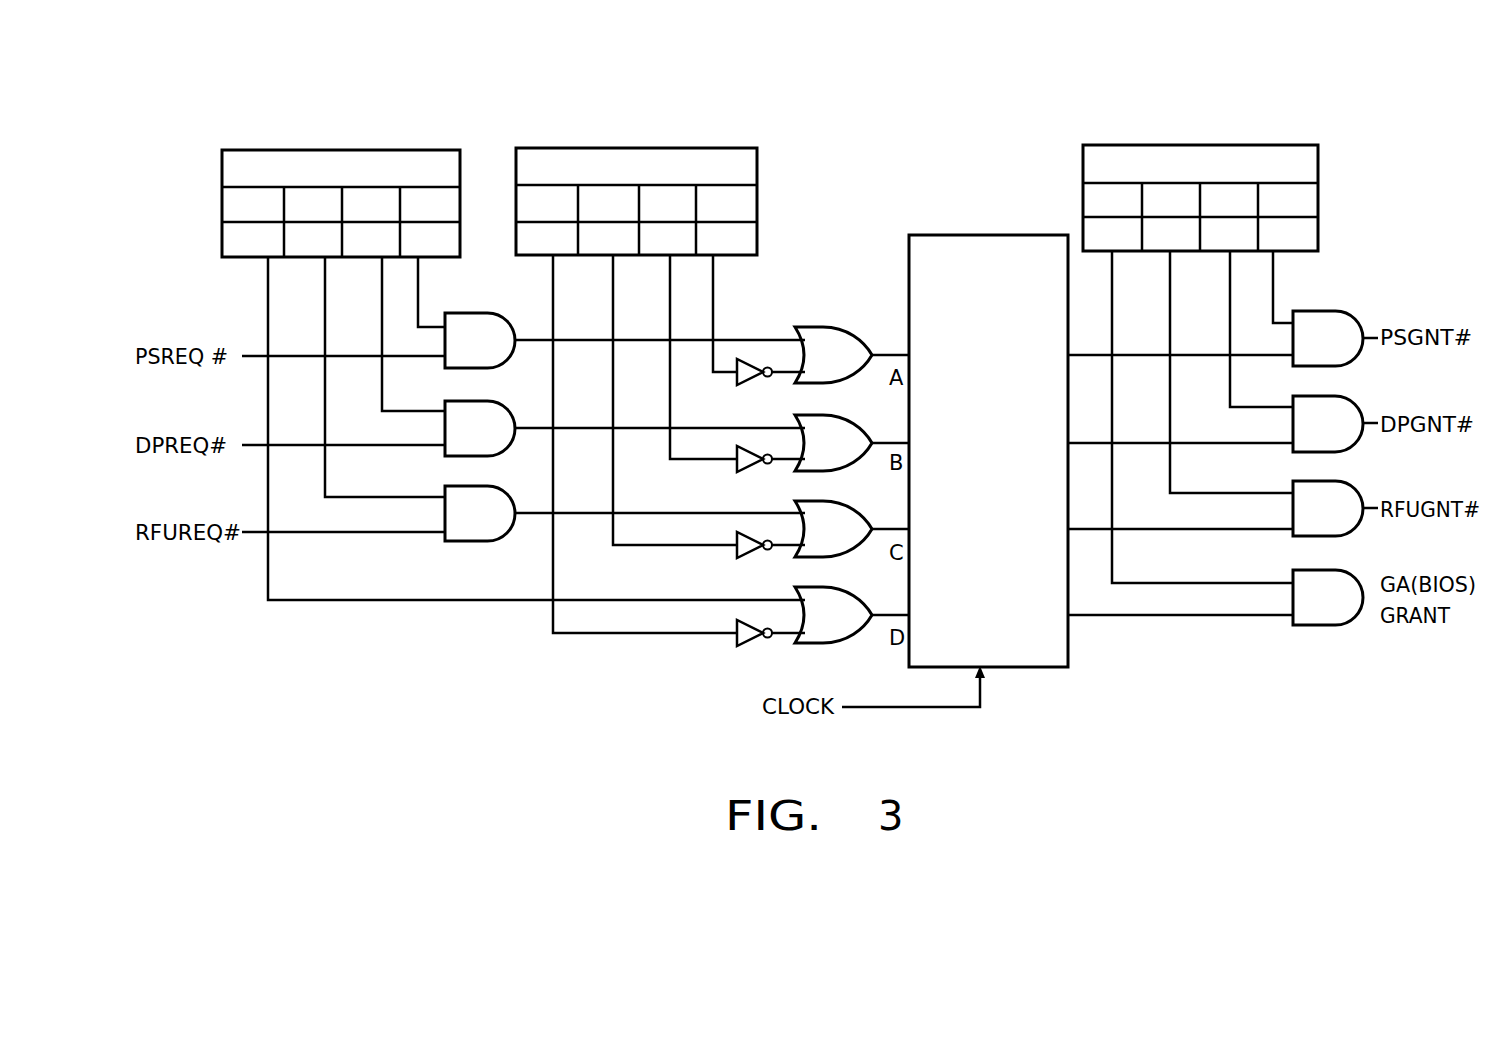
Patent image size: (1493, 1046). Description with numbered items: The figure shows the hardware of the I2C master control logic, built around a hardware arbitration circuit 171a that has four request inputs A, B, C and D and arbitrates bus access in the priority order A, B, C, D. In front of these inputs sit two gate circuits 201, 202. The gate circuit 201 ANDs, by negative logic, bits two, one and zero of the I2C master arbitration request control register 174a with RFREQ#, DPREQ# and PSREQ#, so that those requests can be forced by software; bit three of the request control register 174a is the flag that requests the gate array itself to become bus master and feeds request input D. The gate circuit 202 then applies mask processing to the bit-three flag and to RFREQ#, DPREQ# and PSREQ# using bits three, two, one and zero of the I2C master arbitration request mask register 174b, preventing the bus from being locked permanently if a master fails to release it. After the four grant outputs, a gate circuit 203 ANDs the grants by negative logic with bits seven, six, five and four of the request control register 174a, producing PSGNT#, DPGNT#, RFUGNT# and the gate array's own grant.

The I2C master arbitration request control register 174a is at (271, 150).
The I2C master arbitration request mask register 174b is at (592, 148).
The hardware arbitration circuit 171a is at (944, 235).
The gate circuit 201 is at (471, 556).
The gate circuit 202 is at (714, 650).
The gate circuit 203 is at (1325, 634).